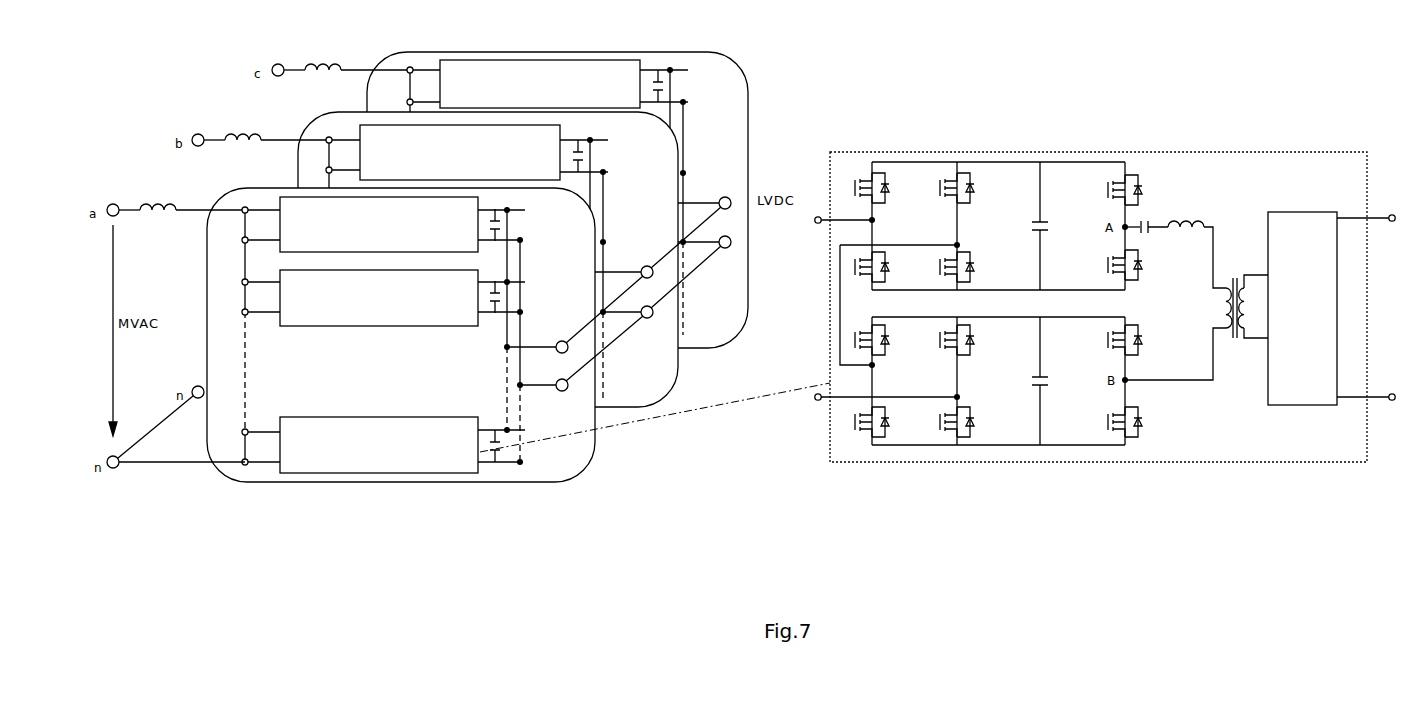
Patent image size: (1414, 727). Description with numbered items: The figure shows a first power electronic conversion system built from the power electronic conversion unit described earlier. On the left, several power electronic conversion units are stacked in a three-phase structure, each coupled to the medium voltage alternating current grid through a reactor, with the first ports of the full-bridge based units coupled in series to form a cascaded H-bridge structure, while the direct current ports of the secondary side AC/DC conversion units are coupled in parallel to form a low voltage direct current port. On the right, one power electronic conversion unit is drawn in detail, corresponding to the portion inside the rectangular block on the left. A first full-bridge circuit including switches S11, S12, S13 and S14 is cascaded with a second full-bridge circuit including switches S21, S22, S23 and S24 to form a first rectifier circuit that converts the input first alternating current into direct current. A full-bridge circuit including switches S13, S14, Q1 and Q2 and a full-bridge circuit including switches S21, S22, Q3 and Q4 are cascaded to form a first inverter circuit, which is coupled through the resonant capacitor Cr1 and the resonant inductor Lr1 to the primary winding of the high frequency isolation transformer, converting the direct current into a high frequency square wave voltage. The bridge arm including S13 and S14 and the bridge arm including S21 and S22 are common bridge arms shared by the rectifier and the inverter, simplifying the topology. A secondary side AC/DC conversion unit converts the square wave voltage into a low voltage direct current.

The switch S11 is at (860, 188).
The switch S12 is at (885, 267).
The switch S13 is at (944, 188).
The switch S14 is at (946, 267).
The switch S21 is at (878, 350).
The switch S22 is at (860, 422).
The switch S23 is at (952, 348).
The switch S24 is at (946, 422).
The switch Q1 is at (1113, 190).
The switch Q2 is at (1113, 265).
The switch Q3 is at (1114, 340).
The switch Q4 is at (1114, 422).
The resonant capacitor Cr1 is at (1154, 236).
The resonant inductor Lr1 is at (1186, 235).